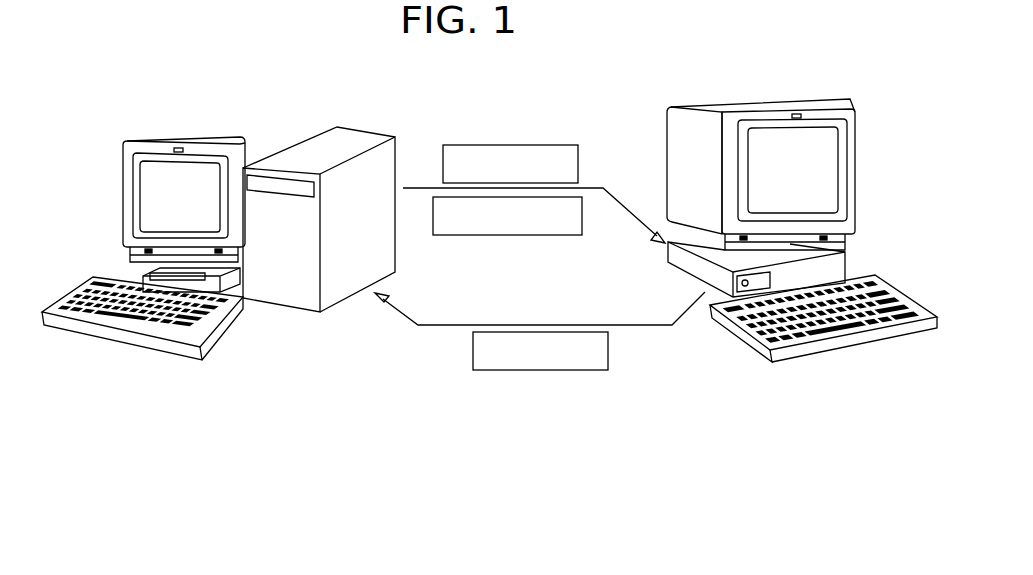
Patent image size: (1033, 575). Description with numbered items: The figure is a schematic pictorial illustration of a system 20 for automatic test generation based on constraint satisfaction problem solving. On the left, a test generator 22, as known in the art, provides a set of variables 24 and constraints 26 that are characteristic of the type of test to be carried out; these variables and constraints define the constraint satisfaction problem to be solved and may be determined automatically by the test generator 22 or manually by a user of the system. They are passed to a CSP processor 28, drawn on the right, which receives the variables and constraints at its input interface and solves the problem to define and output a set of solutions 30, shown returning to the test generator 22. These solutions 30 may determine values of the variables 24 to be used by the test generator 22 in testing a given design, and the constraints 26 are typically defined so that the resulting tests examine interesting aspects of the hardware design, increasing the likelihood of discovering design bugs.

The system 20 is at (145, 85).
The test generator 22 is at (336, 136).
The variables 24 is at (473, 145).
The constraints 26 is at (469, 235).
The CSP processor 28 is at (840, 262).
The solutions 30 is at (538, 370).